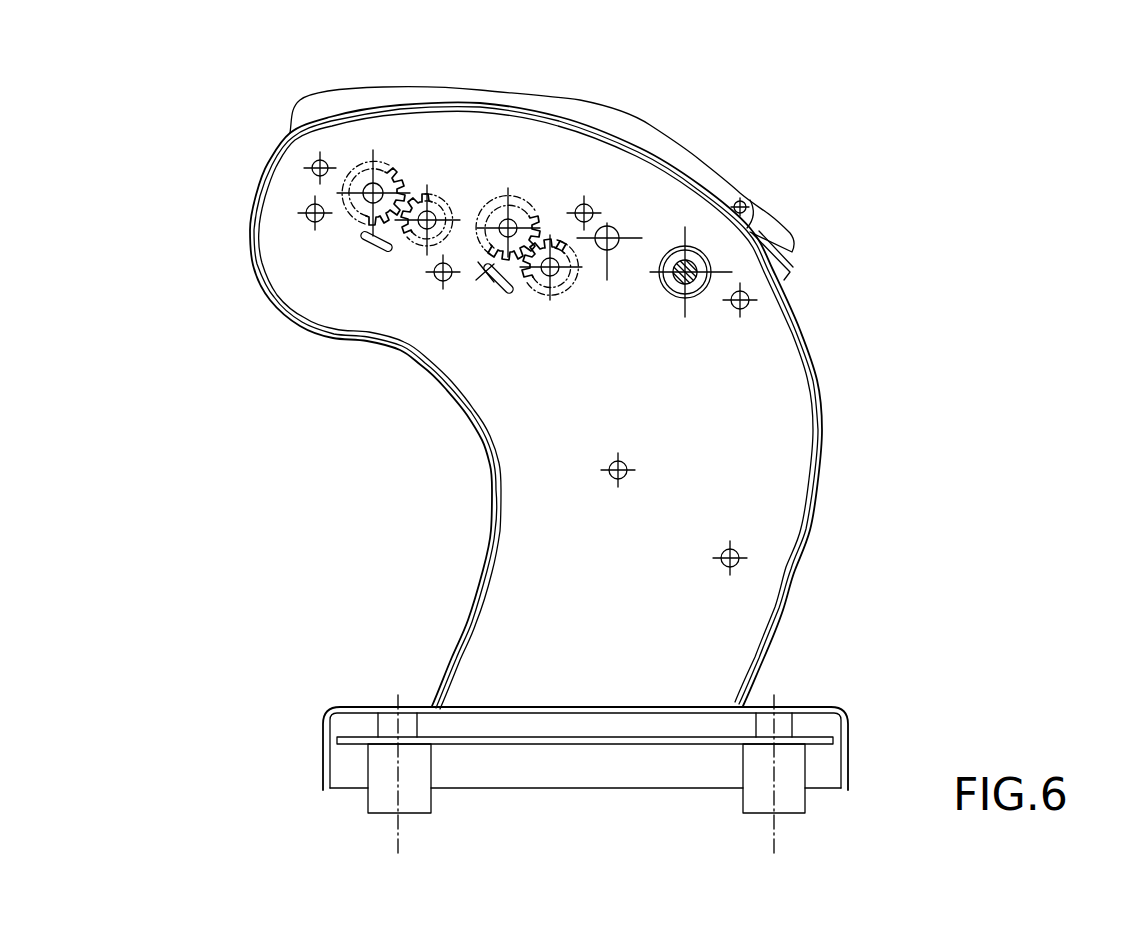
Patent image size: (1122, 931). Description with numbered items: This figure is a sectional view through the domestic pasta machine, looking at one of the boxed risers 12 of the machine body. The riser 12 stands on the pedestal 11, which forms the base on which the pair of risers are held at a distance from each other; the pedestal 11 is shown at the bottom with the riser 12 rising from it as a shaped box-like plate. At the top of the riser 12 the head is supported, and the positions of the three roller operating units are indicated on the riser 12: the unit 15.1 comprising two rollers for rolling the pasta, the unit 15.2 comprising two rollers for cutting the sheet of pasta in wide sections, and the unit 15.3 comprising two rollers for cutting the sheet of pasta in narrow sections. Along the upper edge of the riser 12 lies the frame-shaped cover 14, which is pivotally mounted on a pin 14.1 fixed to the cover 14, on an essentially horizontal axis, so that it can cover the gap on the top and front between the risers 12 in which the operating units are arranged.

The pedestal 11 is at (840, 712).
The boxed riser 12 is at (536, 405).
The cover 14 is at (762, 184).
The pin 14.1 is at (317, 167).
The roller operating unit for rolling 15.1 is at (675, 301).
The roller operating unit for wide cutting 15.2 is at (539, 297).
The roller operating unit for narrow cutting 15.3 is at (348, 228).